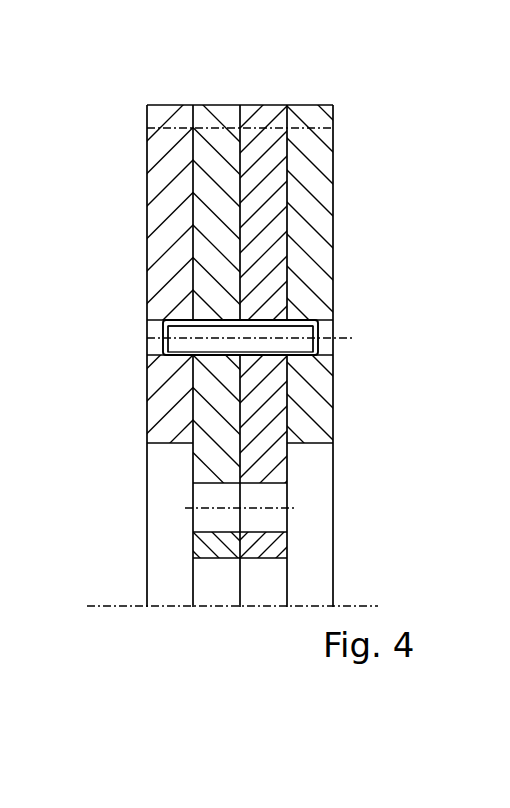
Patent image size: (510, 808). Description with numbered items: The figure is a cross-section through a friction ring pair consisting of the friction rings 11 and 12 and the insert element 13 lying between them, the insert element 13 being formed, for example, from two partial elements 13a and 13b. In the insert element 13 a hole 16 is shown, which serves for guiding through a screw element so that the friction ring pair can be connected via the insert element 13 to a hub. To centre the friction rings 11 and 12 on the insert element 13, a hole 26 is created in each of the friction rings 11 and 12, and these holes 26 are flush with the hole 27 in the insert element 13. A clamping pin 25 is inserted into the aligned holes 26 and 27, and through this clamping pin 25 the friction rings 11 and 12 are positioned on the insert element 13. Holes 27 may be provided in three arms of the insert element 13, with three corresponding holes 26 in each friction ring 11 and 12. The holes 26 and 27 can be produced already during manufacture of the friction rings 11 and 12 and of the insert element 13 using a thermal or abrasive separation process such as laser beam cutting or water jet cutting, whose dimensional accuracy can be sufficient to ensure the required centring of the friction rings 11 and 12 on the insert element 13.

The friction ring 11 is at (148, 215).
The friction ring 12 is at (328, 202).
The insert element 13 is at (237, 271).
The partial element 13a is at (225, 120).
The partial element 13b is at (263, 297).
The hole 16 is at (275, 497).
The clamping pin 25 is at (164, 331).
The hole 26 is at (172, 319).
The hole 27 is at (222, 320).